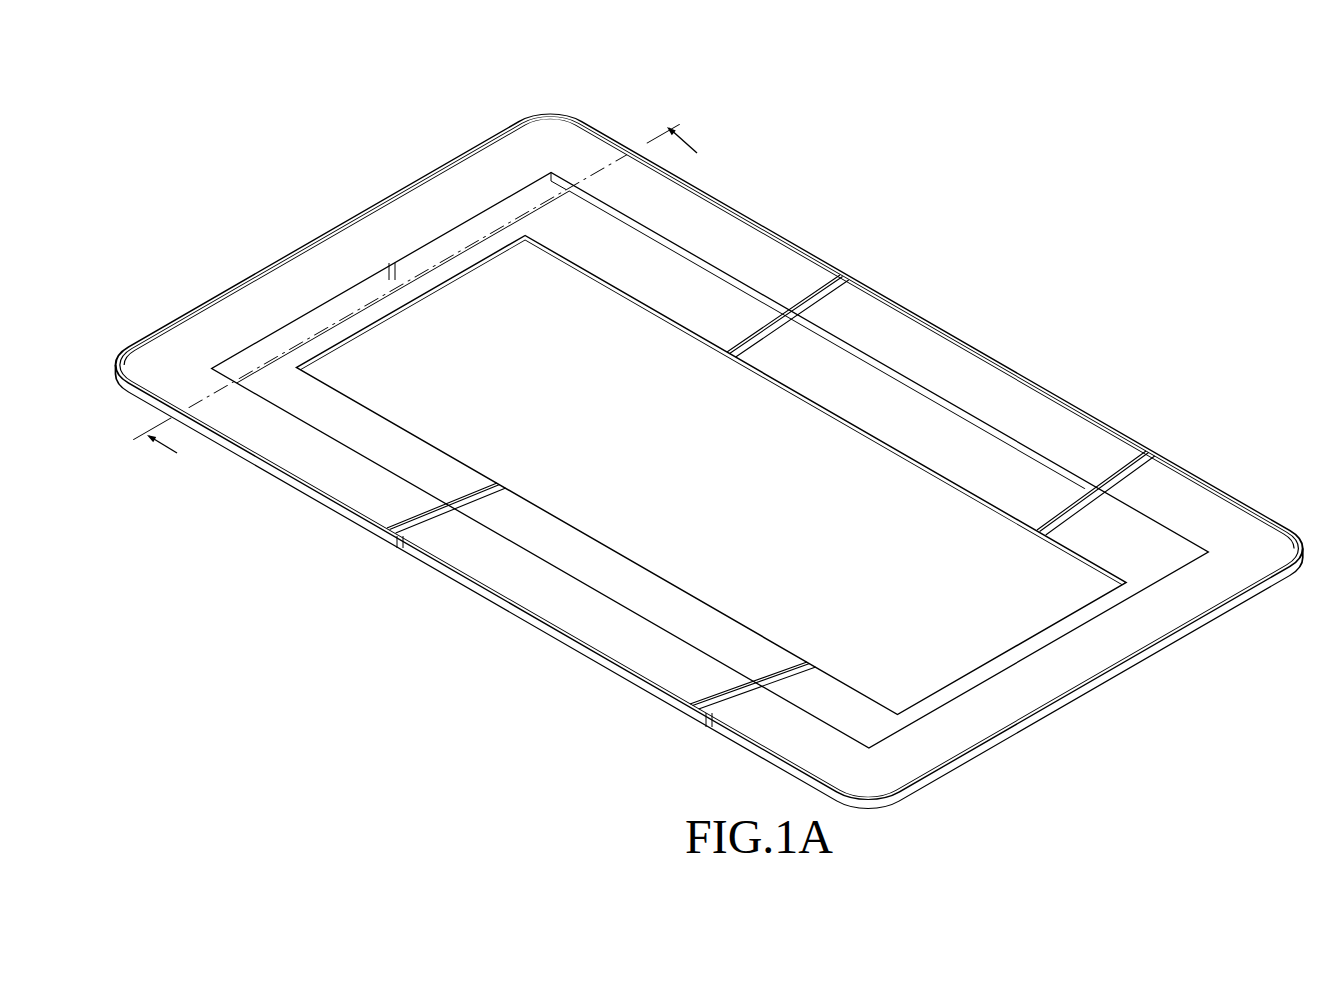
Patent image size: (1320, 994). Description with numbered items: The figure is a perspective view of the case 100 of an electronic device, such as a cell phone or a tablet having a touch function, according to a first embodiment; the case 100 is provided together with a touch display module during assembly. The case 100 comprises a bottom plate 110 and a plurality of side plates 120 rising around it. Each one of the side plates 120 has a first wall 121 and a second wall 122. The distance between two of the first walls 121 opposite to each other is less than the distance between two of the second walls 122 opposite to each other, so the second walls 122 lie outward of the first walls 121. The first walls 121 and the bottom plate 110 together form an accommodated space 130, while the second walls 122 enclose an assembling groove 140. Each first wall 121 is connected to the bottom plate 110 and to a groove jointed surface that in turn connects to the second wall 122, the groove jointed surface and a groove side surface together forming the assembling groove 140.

The case 100 is at (687, 449).
The bottom plate 110 is at (728, 318).
The side plates 120 is at (687, 456).
The first wall 121 is at (557, 174).
The second wall 122 is at (603, 131).
The accommodated space 130 is at (823, 333).
The assembling groove 140 is at (937, 318).